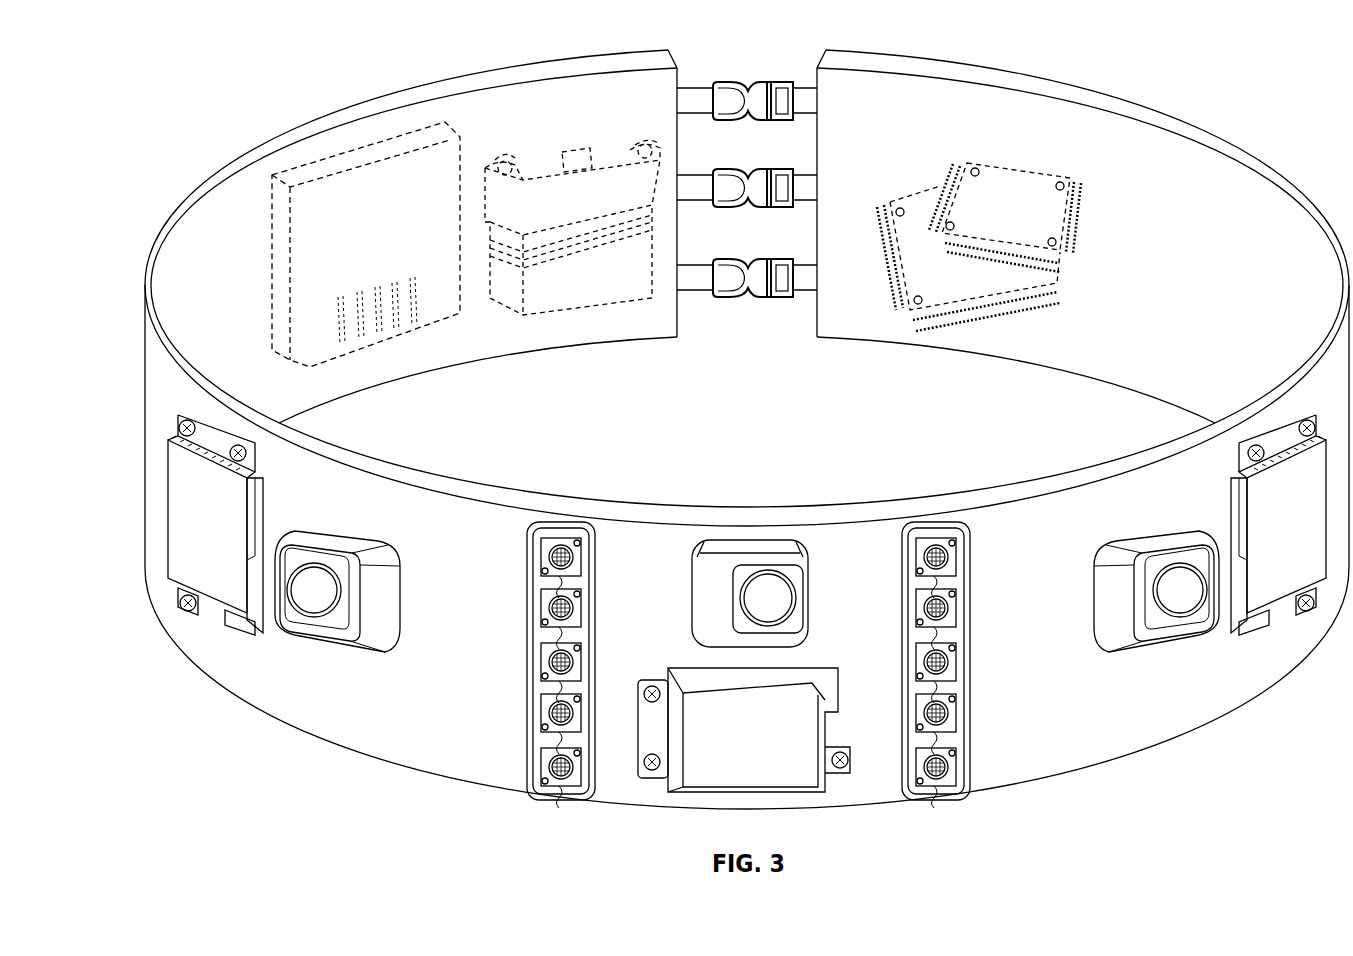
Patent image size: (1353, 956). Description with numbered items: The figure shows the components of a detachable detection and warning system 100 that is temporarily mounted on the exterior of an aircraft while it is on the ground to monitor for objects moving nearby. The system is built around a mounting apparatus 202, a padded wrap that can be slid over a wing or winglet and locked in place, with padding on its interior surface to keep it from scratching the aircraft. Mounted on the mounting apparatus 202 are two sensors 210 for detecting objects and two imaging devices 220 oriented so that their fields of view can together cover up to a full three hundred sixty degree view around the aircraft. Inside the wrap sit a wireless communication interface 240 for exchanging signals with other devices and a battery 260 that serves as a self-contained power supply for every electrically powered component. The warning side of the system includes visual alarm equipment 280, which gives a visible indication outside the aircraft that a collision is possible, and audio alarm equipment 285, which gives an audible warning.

The detachable detection and warning system 100 is at (178, 72).
The mounting apparatus 202 is at (243, 213).
The sensors 210 is at (210, 427).
The imaging devices 220 is at (748, 545).
The wireless communication interface 240 is at (1010, 165).
The battery 260 is at (540, 165).
The visual alarm equipment 280 is at (527, 656).
The audio alarm equipment 285 is at (345, 125).